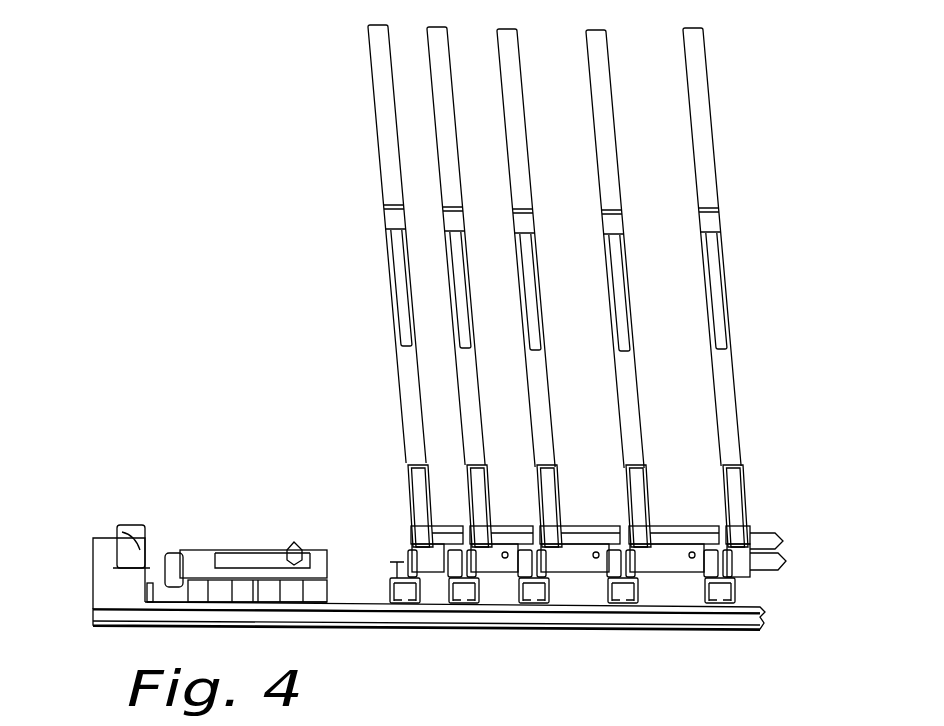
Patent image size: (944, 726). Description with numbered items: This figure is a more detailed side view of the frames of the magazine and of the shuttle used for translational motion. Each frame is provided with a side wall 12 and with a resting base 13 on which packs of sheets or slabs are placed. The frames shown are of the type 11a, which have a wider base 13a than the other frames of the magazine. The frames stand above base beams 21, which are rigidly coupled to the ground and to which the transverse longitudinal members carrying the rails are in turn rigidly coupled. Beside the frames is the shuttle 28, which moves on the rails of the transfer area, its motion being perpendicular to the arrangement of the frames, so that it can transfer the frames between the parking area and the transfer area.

The frame of wider-base type 11a is at (645, 314).
The side wall 12 is at (386, 109).
The resting base 13 is at (450, 532).
The wider base 13a is at (673, 530).
The base beam 21 is at (683, 631).
The shuttle 28 is at (327, 523).